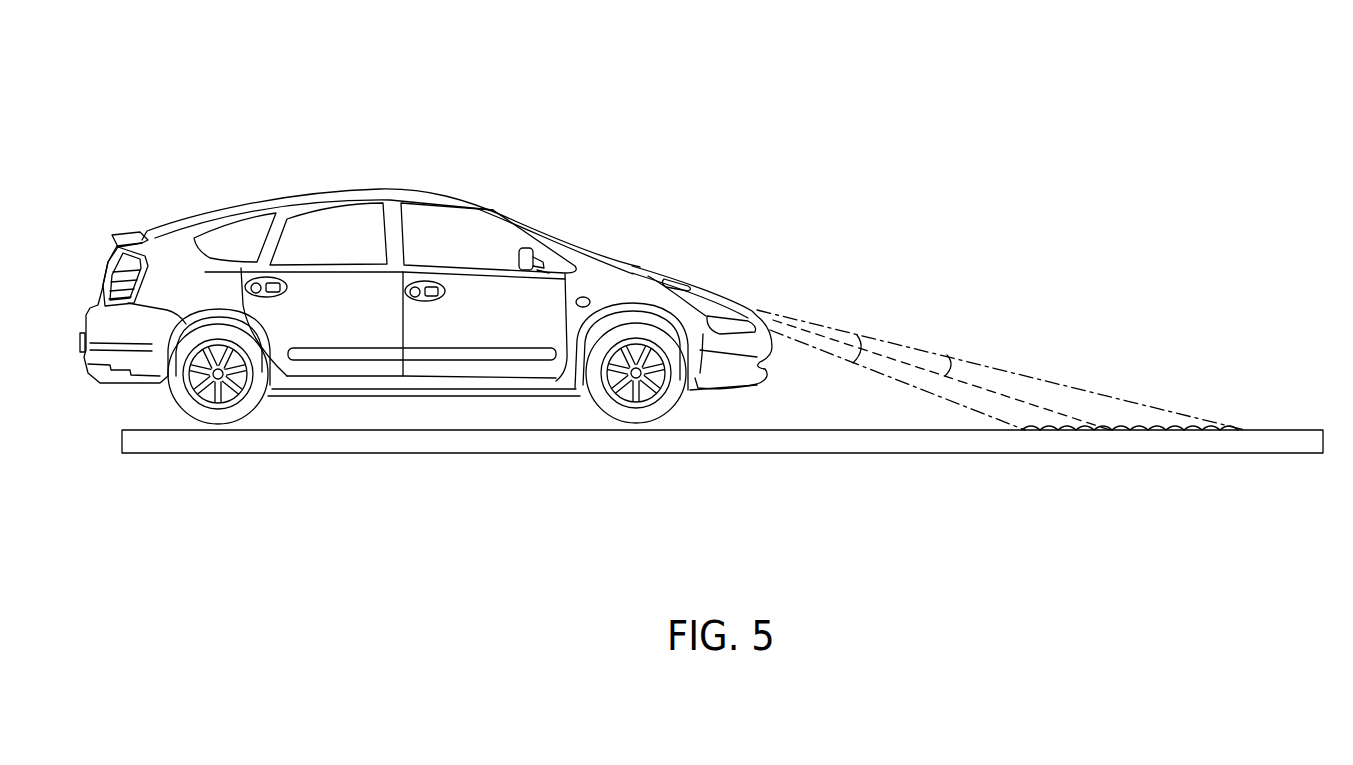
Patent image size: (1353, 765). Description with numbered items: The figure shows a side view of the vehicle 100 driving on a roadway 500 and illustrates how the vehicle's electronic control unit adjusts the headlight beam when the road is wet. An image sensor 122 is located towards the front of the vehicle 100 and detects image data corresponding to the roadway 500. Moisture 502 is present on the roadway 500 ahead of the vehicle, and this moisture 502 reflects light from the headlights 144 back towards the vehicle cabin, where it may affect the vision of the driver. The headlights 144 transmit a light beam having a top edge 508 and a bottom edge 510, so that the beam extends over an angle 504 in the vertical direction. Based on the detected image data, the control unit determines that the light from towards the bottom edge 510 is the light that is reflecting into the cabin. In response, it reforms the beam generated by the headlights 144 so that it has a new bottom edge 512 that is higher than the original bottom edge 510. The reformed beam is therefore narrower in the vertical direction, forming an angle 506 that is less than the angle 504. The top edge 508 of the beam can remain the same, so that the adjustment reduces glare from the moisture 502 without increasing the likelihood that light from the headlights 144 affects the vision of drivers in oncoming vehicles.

The vehicle 100 is at (426, 253).
The image sensor 122 is at (519, 214).
The headlights 144 is at (680, 284).
The roadway 500 is at (1293, 443).
The moisture 502 is at (1193, 424).
The angle 504 is at (862, 345).
The angle 506 is at (952, 364).
The top edge 508 is at (833, 326).
The bottom edge 510 is at (828, 352).
The bottom edge 512 is at (1048, 403).